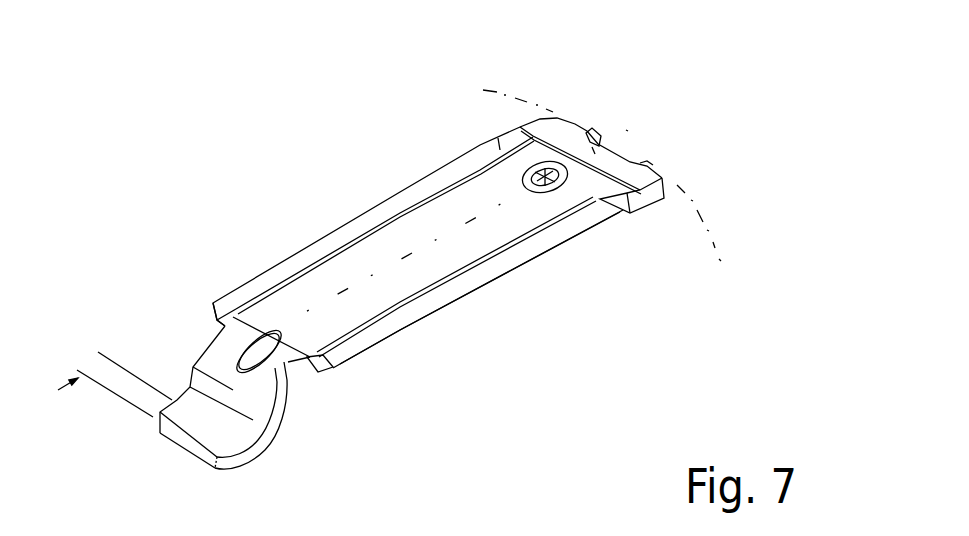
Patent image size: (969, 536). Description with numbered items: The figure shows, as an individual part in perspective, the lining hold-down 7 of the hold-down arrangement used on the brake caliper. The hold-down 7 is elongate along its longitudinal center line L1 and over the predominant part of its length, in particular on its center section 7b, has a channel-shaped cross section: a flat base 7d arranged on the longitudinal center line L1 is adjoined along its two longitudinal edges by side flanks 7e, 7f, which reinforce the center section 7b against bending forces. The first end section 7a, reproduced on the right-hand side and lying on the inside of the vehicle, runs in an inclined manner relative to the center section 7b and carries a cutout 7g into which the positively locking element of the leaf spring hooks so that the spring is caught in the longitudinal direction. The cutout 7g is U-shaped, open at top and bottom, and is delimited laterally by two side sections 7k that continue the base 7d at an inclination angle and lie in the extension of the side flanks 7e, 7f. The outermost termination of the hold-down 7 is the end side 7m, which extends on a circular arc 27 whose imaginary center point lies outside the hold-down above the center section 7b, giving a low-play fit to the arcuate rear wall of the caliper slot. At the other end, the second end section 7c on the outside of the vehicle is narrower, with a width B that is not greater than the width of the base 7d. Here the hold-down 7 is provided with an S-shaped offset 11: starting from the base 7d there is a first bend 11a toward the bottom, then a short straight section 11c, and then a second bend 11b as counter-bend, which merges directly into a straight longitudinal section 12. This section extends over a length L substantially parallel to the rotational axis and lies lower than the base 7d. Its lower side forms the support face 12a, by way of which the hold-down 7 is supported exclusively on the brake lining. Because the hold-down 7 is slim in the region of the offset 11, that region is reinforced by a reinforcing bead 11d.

The lining hold-down 7 is at (305, 95).
The first end section 7a is at (576, 105).
The center section 7b is at (328, 206).
The second end section 7c is at (190, 309).
The base 7d is at (295, 297).
The side flank 7e is at (467, 165).
The side flank 7f is at (543, 240).
The cutout 7g is at (630, 157).
The side sections 7k is at (590, 131).
The end side 7m is at (668, 173).
The offset 11 is at (267, 440).
The first bend 11a is at (257, 382).
The second bend 11b is at (215, 415).
The short section 11c is at (253, 406).
The reinforcing bead 11d is at (257, 350).
The straight longitudinal section 12 is at (240, 463).
The support face 12a is at (207, 467).
The circular arc 27 is at (715, 247).
The length L is at (107, 351).
The longitudinal center line L1 is at (476, 218).
The width B is at (195, 367).